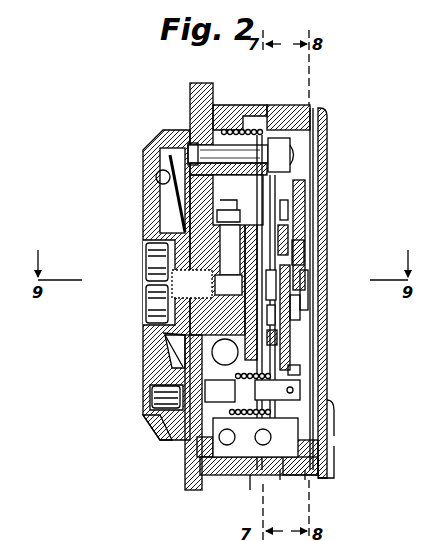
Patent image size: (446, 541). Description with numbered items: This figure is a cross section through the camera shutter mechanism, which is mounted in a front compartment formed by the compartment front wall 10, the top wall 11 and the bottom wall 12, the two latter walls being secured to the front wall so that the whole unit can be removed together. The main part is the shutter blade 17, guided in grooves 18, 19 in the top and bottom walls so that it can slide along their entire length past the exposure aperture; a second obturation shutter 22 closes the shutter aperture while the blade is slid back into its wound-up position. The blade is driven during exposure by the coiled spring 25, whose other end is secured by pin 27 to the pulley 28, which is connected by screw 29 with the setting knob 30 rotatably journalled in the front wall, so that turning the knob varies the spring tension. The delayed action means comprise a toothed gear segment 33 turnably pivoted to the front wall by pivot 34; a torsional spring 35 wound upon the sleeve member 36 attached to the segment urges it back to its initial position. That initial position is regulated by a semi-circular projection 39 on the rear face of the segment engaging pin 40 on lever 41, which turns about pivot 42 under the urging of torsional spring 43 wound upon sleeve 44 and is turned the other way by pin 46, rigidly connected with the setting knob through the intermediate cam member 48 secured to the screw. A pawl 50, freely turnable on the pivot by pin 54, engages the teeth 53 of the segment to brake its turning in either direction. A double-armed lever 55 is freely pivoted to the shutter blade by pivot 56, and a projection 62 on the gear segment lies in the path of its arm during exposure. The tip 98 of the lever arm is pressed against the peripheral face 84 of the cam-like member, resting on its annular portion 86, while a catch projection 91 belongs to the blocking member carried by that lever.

The compartment front wall 10 is at (185, 468).
The top wall 11 is at (205, 160).
The bottom wall 12 is at (252, 476).
The shutter blade 17 is at (313, 118).
The groove 18 is at (325, 125).
The groove 19 is at (306, 472).
The obturation shutter 22 is at (288, 232).
The coiled spring 25 is at (150, 190).
The pin 27 is at (146, 215).
The pulley 28 is at (150, 328).
The screw 29 is at (207, 284).
The setting knob 30 is at (145, 378).
The toothed gear segment 33 is at (300, 305).
The pivot 34 is at (265, 397).
The torsional spring 35 is at (255, 438).
The sleeve member 36 is at (280, 472).
The semi-circular projection 39 is at (292, 323).
The pin 40 is at (296, 345).
The lever 41 is at (283, 116).
The pivot 42 is at (190, 130).
The torsional spring 43 is at (252, 128).
The sleeve 44 is at (222, 118).
The pin 46 is at (290, 275).
The cam member 48 is at (258, 240).
The pawl 50 is at (280, 185).
The teeth 53 is at (303, 195).
The pin 54 is at (290, 175).
The double-armed lever 55 is at (308, 290).
The pivot 56 is at (300, 255).
The projection 62 is at (300, 370).
The peripheral face 84 is at (238, 388).
The annular portion 86 is at (286, 215).
The catch projection 91 is at (296, 296).
The tip 98 is at (238, 225).